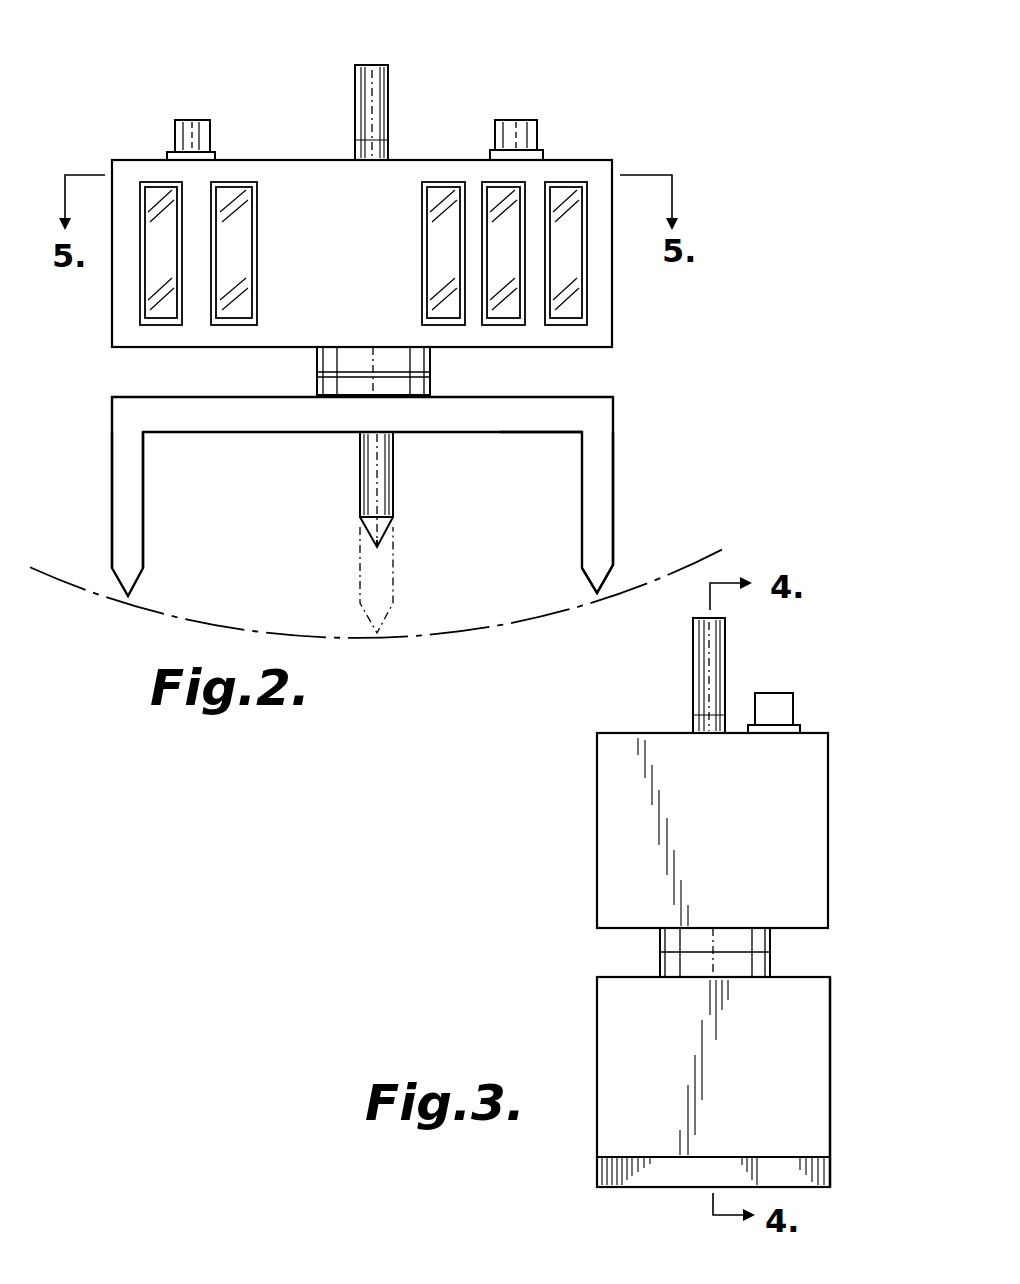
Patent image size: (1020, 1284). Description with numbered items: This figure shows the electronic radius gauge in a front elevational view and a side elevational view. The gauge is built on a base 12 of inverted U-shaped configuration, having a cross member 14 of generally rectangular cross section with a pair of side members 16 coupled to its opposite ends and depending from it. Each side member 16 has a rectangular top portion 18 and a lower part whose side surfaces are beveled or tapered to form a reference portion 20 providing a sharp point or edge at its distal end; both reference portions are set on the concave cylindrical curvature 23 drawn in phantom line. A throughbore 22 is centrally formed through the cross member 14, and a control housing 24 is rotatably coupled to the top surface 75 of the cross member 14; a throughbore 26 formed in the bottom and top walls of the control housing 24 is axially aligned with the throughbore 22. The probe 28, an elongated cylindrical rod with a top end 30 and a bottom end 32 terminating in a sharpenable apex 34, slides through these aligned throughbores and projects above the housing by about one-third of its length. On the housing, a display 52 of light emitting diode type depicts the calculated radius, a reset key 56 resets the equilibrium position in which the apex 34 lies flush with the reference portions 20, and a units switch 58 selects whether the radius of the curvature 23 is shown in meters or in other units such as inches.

In FIG. 2, the base 12 is at (613, 397).
In FIG. 3, the base 12 is at (830, 977).
In FIG. 2, the cross member 14 is at (535, 432).
In FIG. 2, the side members 16 is at (143, 490).
In FIG. 3, the side members 16 is at (830, 1117).
In FIG. 2, the top portion 18 is at (112, 468).
In FIG. 3, the top portion 18 is at (785, 1050).
In FIG. 2, the reference portion 20 is at (600, 565).
In FIG. 3, the reference portion 20 is at (820, 1163).
In FIG. 2, the throughbore 22 is at (395, 440).
In FIG. 2, the curvature 23 is at (580, 603).
In FIG. 2, the control housing 24 is at (612, 160).
In FIG. 3, the control housing 24 is at (828, 733).
In FIG. 2, the throughbore 26 is at (390, 155).
In FIG. 3, the throughbore 26 is at (690, 732).
In FIG. 2, the probe 28 is at (388, 92).
In FIG. 3, the probe 28 is at (725, 675).
In FIG. 2, the top end 30 is at (355, 84).
In FIG. 2, the bottom end 32 is at (395, 547).
In FIG. 2, the apex 34 is at (370, 560).
In FIG. 2, the display 52 is at (572, 298).
In FIG. 2, the reset key 56 is at (535, 120).
In FIG. 2, the units switch 58 is at (178, 120).
In FIG. 2, the top surface 75 is at (237, 395).